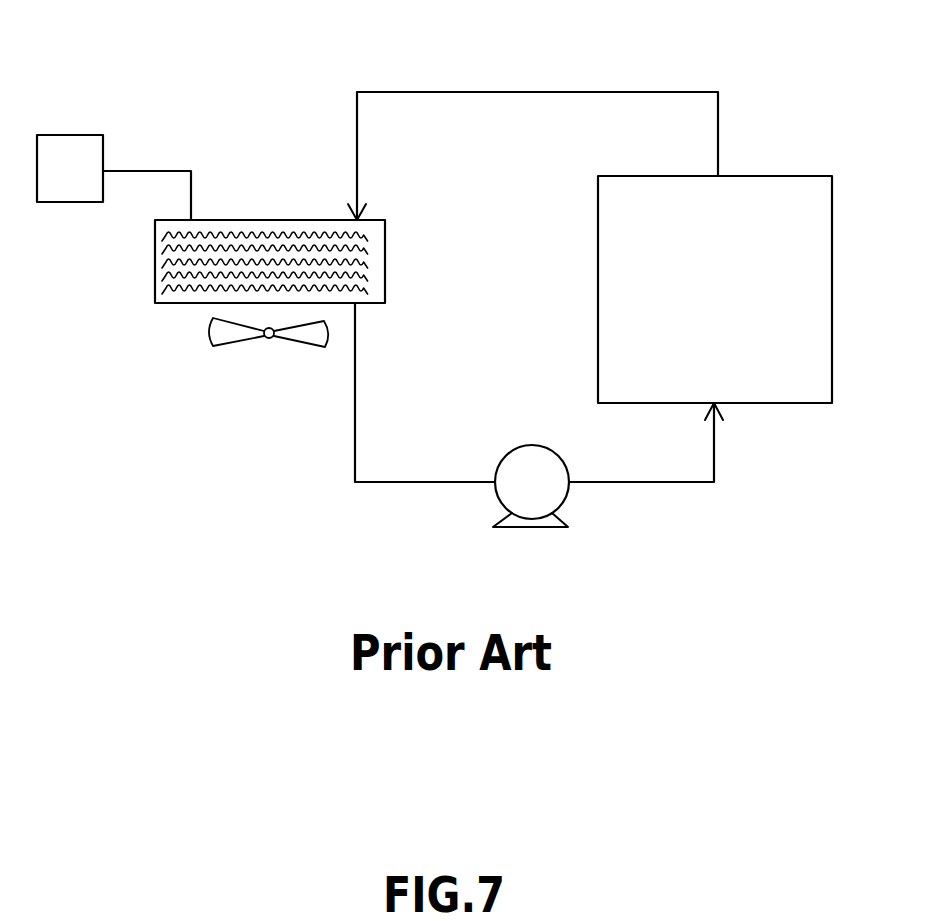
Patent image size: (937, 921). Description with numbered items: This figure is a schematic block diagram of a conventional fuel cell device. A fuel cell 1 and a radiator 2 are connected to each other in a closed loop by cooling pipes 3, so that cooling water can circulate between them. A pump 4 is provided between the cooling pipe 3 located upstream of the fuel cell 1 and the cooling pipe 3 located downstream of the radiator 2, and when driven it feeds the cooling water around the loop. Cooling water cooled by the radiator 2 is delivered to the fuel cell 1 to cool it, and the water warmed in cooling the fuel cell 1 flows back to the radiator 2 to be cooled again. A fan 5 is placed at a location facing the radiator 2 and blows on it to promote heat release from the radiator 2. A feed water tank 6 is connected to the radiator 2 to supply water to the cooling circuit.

The fuel cell 1 is at (832, 267).
The radiator 2 is at (243, 220).
The cooling pipes 3 is at (487, 92).
The pump 4 is at (568, 492).
The fan 5 is at (292, 342).
The feed water tank 6 is at (70, 202).